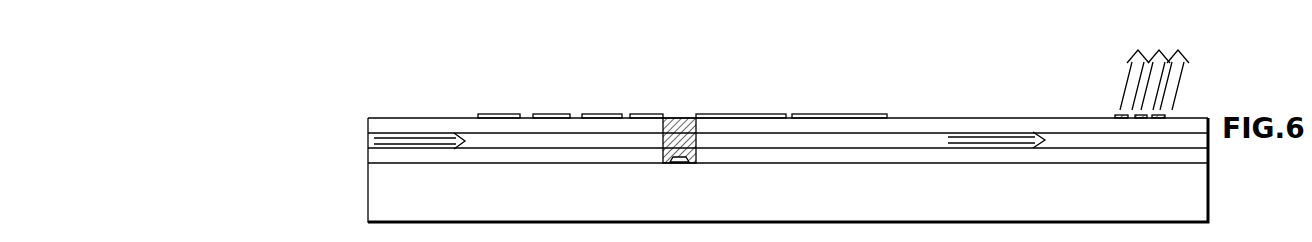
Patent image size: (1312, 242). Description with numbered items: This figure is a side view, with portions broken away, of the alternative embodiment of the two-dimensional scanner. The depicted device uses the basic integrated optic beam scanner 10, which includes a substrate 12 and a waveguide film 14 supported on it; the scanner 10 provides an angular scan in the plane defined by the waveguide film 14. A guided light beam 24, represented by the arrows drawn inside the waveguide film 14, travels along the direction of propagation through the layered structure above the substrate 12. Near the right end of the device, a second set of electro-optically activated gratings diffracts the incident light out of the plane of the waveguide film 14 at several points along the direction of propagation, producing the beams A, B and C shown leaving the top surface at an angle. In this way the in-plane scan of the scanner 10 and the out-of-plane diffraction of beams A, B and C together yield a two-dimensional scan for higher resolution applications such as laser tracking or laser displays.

The integrated optic beam scanner 10 is at (930, 117).
The substrate 12 is at (372, 190).
The waveguide film 14 is at (372, 142).
The guided light beam 24 is at (425, 142).
The beam A is at (1131, 62).
The beam B is at (1155, 60).
The beam C is at (1176, 62).